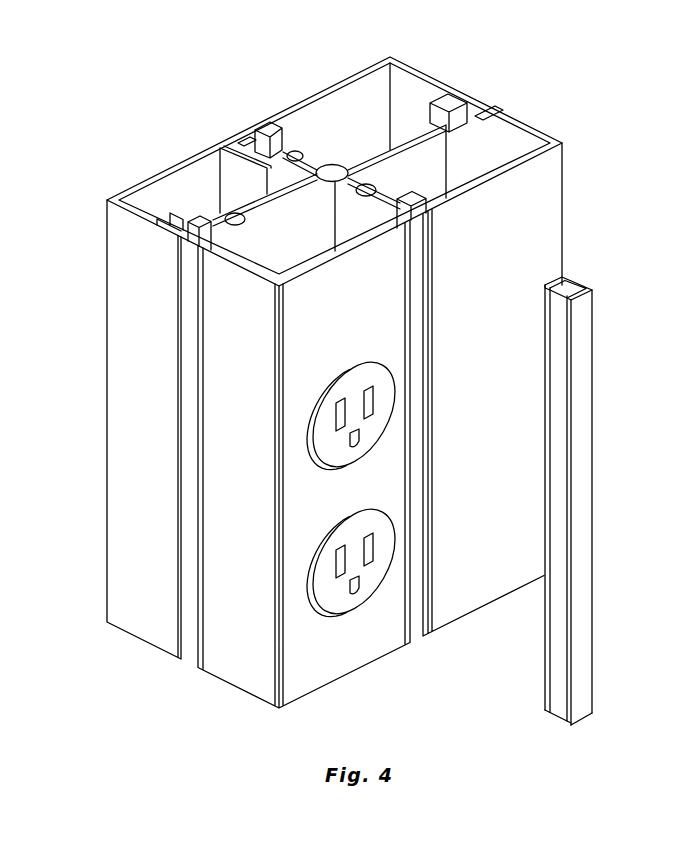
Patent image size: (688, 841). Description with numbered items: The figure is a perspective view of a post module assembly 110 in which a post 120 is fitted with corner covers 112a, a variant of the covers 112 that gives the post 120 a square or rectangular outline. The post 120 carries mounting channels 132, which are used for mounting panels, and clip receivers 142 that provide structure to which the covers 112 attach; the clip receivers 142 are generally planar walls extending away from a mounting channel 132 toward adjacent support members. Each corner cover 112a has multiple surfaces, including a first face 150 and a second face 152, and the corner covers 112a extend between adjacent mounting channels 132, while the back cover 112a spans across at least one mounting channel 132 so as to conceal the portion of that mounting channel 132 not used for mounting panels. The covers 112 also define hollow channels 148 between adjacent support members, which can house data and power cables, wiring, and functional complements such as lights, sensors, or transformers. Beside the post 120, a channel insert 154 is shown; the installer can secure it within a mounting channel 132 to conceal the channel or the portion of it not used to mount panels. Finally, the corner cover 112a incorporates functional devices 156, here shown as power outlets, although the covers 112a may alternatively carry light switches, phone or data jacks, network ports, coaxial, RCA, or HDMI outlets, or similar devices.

The post module assembly 110 is at (371, 380).
The cover 112 is at (676, 158).
The corner cover 112a is at (138, 173).
The post 120 is at (257, 196).
The mounting channel 132 is at (253, 137).
The clip receiver 142 is at (512, 149).
The hollow channel 148 is at (288, 265).
The first face 150 is at (257, 471).
The second face 152 is at (232, 516).
The channel insert 154 is at (595, 331).
The functional device 156 is at (323, 598).